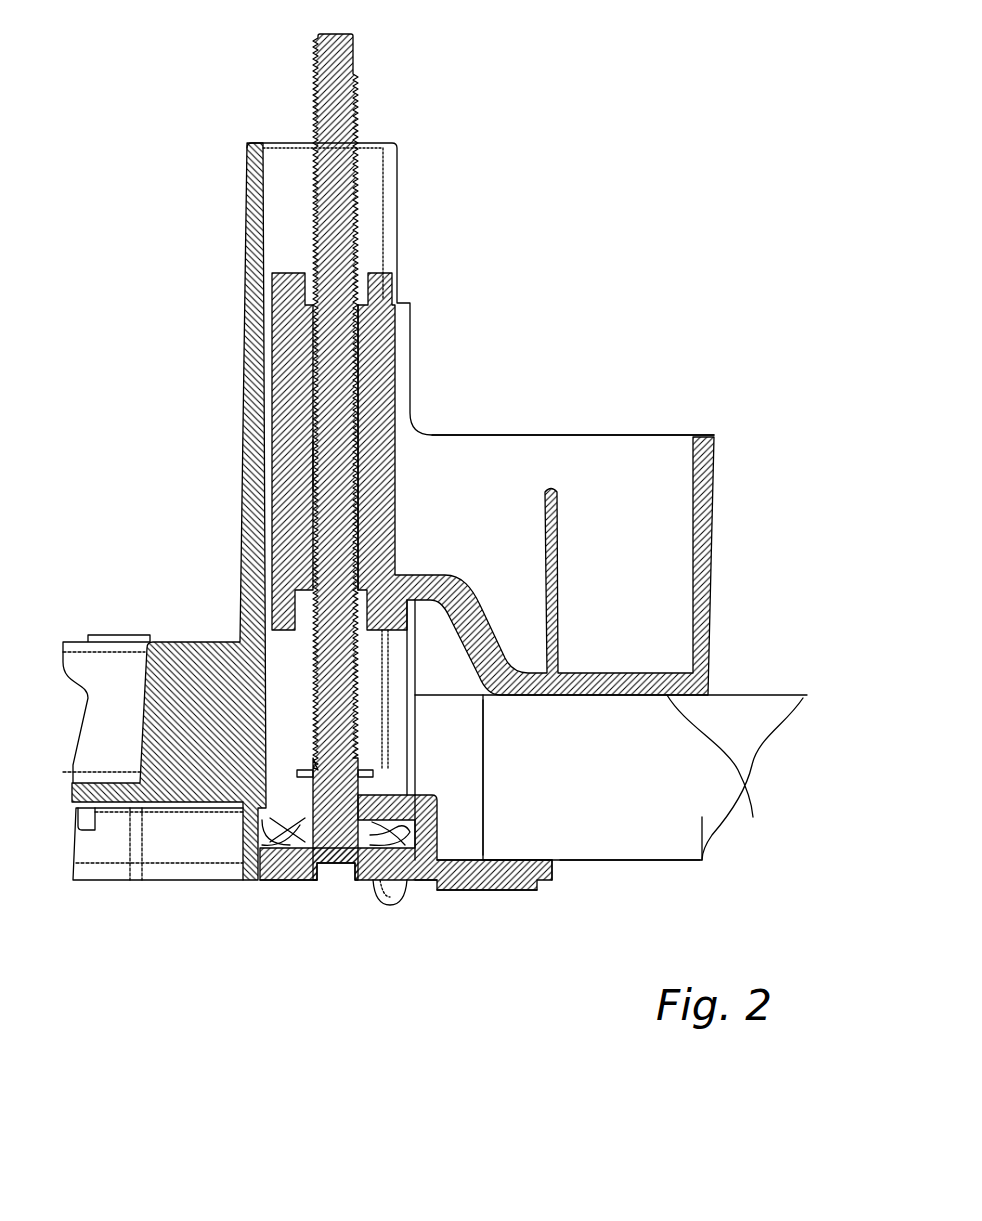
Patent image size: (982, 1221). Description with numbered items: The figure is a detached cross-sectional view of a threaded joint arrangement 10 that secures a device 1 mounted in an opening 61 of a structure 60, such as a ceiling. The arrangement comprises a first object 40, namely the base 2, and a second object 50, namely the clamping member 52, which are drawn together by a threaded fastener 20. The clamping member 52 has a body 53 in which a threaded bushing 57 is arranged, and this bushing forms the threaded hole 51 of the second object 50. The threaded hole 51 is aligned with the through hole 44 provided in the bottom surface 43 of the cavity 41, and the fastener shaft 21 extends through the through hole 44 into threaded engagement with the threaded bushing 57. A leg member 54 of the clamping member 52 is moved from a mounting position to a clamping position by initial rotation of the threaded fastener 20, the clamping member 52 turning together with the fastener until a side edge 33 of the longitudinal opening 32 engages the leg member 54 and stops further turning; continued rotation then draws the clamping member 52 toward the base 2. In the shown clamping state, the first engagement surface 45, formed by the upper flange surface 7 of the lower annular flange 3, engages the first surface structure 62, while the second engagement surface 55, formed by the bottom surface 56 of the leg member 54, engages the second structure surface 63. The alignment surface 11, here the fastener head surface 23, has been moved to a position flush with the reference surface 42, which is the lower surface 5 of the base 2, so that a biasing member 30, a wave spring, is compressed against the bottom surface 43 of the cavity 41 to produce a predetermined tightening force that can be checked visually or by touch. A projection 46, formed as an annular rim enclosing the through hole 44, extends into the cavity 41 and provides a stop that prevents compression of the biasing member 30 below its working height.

The device 1 is at (183, 662).
The base 2 is at (427, 880).
The lower annular flange 3 is at (552, 873).
The lower surface of the base 5 is at (491, 924).
The upper flange surface 7 is at (524, 815).
The threaded joint arrangement 10 is at (480, 278).
The alignment surface 11 is at (235, 935).
The threaded fastener 20 is at (349, 901).
The fastener shaft 21 is at (342, 87).
The fastener head surface 23 is at (302, 880).
The biasing member 30 is at (283, 808).
The longitudinal opening 32 is at (386, 221).
The side edge 33 is at (480, 278).
The first object 40 is at (349, 901).
The cavity 41 is at (388, 890).
The reference surface 42 is at (525, 887).
The bottom surface of the cavity 43 is at (263, 837).
The through hole 44 is at (345, 798).
The first engagement surface 45 is at (533, 860).
The projection 46 is at (392, 812).
The second object 50 is at (451, 534).
The threaded hole 51 is at (317, 483).
The clamping member 52 is at (451, 534).
The body 53 is at (288, 375).
The leg member 54 is at (497, 470).
The second engagement surface 55 is at (741, 777).
The bottom surface of the leg member 56 is at (660, 822).
The threaded bushing 57 is at (370, 367).
The structure 60 is at (615, 790).
The opening 61 is at (483, 812).
The first surface structure 62 is at (633, 863).
The second structure surface 63 is at (758, 695).